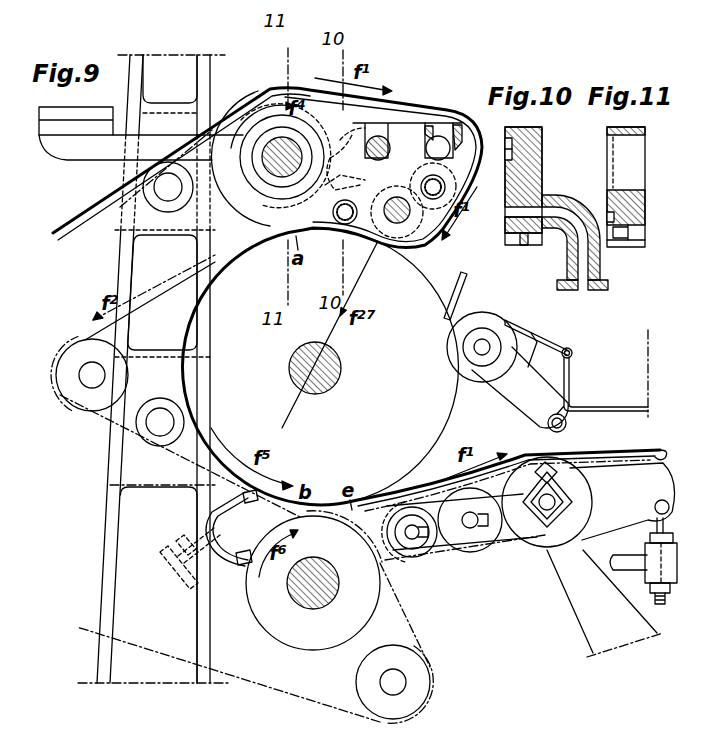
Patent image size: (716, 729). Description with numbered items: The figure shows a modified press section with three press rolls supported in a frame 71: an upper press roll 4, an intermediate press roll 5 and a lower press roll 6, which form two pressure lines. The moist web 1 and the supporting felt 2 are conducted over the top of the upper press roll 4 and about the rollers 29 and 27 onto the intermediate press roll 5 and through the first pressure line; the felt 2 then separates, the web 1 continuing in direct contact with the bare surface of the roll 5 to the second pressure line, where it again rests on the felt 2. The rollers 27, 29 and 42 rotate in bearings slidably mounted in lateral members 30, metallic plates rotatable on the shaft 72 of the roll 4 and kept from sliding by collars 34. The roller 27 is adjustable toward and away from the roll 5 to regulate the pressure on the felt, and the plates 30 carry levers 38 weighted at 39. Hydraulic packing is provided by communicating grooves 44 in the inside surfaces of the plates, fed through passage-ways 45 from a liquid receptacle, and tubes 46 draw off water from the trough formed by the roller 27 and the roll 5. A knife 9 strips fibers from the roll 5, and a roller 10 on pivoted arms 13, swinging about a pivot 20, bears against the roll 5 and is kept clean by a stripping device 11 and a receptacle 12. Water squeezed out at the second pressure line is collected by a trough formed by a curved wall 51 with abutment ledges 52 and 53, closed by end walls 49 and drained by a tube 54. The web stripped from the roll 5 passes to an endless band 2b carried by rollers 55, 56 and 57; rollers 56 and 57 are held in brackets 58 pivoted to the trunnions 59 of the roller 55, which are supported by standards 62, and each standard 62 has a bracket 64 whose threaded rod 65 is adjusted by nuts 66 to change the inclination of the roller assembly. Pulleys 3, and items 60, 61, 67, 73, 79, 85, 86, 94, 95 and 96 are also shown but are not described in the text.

In FIG. 9, the moist web 1 is at (96, 204).
In FIG. 9, the supporting felt 2 is at (78, 222).
In FIG. 9, the endless band 2b is at (670, 444).
In FIG. 9, the guide pulley 3 is at (75, 400).
In FIG. 9, the upper press roll 4 is at (262, 95).
In FIG. 9, the intermediate press roll 5 is at (380, 365).
In FIG. 9, the press roll 6 is at (313, 583).
In FIG. 9, the knife 9 is at (462, 292).
In FIG. 9, the roller 10 is at (478, 370).
In FIG. 9, the stripping device 11 is at (540, 337).
In FIG. 9, the receptacle 12 is at (625, 410).
In FIG. 9, the arms 13 is at (527, 395).
In FIG. 9, the pivot 20 is at (548, 428).
In FIG. 9, the roller 27 is at (438, 225).
In FIG. 9, the roller 29 is at (448, 128).
In FIG. 9, the lateral members 30 is at (283, 222).
In FIG. 10, the lateral members 30 is at (528, 172).
In FIG. 11, the lateral members 30 is at (633, 158).
In FIG. 9, the collars 34 is at (250, 156).
In FIG. 9, the levers 38 is at (68, 152).
In FIG. 9, the weight 39 is at (39, 112).
In FIG. 9, the roller 42 is at (368, 128).
In FIG. 9, the grooves 44 is at (335, 232).
In FIG. 10, the grooves 44 is at (524, 246).
In FIG. 11, the grooves 44 is at (611, 217).
In FIG. 9, the passage-ways 45 is at (340, 140).
In FIG. 10, the passage-ways 45 is at (513, 147).
In FIG. 10, the tubes 46 is at (560, 282).
In FIG. 9, the walls 49 is at (231, 529).
In FIG. 9, the curved wall 51 is at (218, 522).
In FIG. 9, the abutment ledge 52 is at (235, 568).
In FIG. 9, the abutment ledge 53 is at (240, 502).
In FIG. 9, the tube 54 is at (168, 558).
In FIG. 9, the roller 55 is at (529, 540).
In FIG. 9, the roller 56 is at (417, 555).
In FIG. 9, the roller 57 is at (468, 543).
In FIG. 9, the brackets 58 is at (493, 525).
In FIG. 9, the trunnions 59 is at (547, 530).
In FIG. 9, the pulley pin 60 is at (471, 527).
In FIG. 9, the pulley pin 61 is at (416, 538).
In FIG. 9, the standard 62 is at (597, 608).
In FIG. 9, the bracket 64 is at (665, 565).
In FIG. 9, the screw-threaded rod 65 is at (662, 602).
In FIG. 9, the nuts 66 is at (673, 538).
In FIG. 9, the pivot 67 is at (668, 503).
In FIG. 9, the frame 71 is at (140, 258).
In FIG. 9, the shaft 72 is at (270, 183).
In FIG. 9, the drum shaft 73 is at (300, 375).
In FIG. 9, the roller shaft 79 is at (303, 596).
In FIG. 9, the guide roller 85 is at (152, 424).
In FIG. 9, the guide roller 86 is at (162, 190).
In FIG. 9, the pin 94 is at (397, 225).
In FIG. 9, the bush 95 is at (392, 140).
In FIG. 9, the insert 96 is at (460, 128).